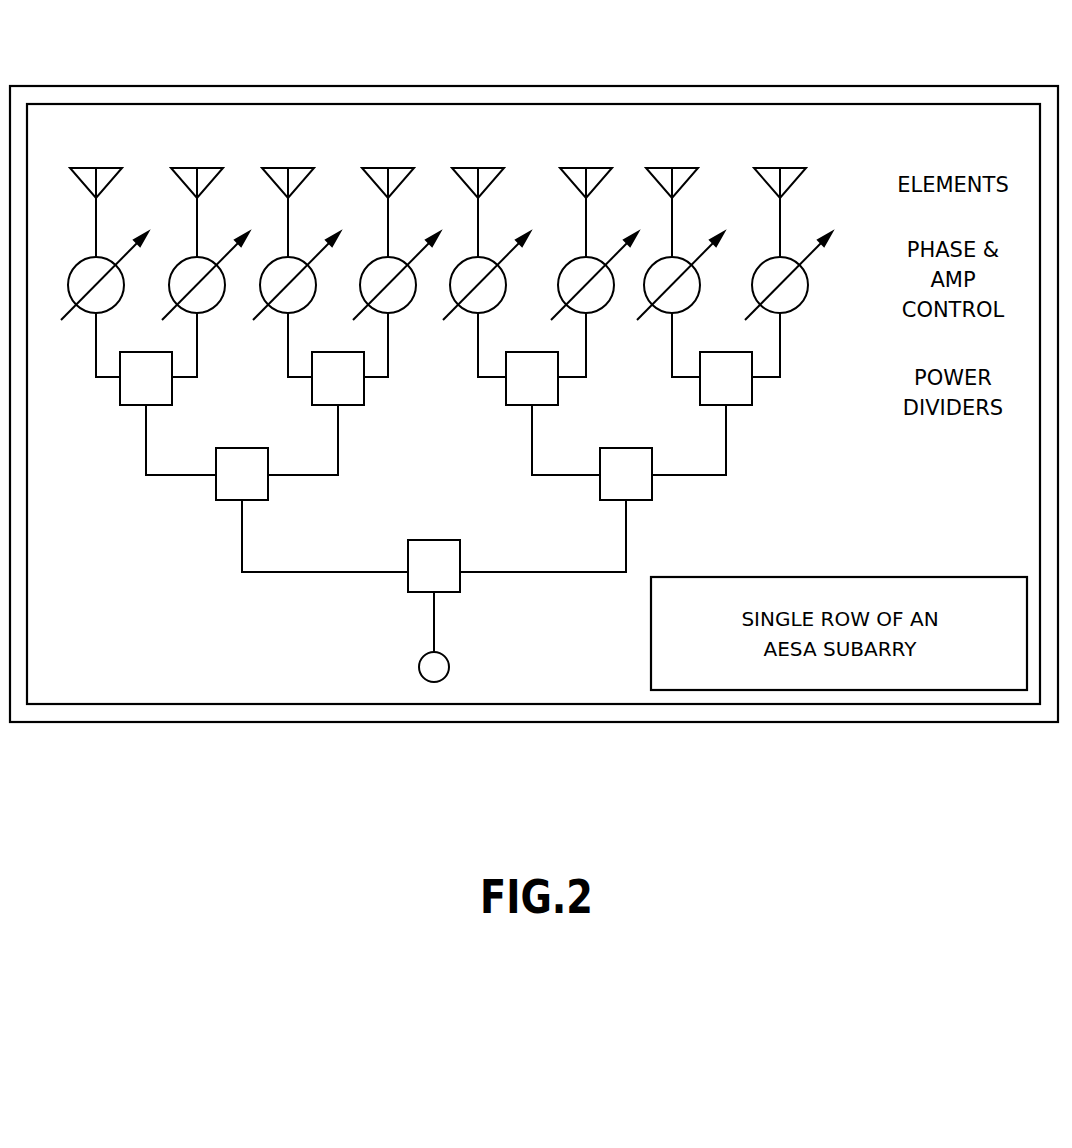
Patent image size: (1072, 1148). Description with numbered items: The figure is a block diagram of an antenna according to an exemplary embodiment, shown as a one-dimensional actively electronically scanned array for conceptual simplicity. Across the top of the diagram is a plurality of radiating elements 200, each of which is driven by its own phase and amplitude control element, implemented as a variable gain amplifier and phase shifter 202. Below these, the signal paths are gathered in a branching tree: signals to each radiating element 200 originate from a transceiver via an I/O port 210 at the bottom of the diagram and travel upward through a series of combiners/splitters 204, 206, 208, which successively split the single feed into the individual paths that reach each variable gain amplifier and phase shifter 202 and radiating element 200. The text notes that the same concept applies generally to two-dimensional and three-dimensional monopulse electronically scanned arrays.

The radiating element 200 is at (788, 166).
The variable gain amplifier and phase shifter 202 is at (794, 312).
The combiner/splitter 204 is at (736, 406).
The combiner/splitter 206 is at (638, 501).
The combiner/splitter 208 is at (436, 539).
The I/O port 210 is at (446, 656).